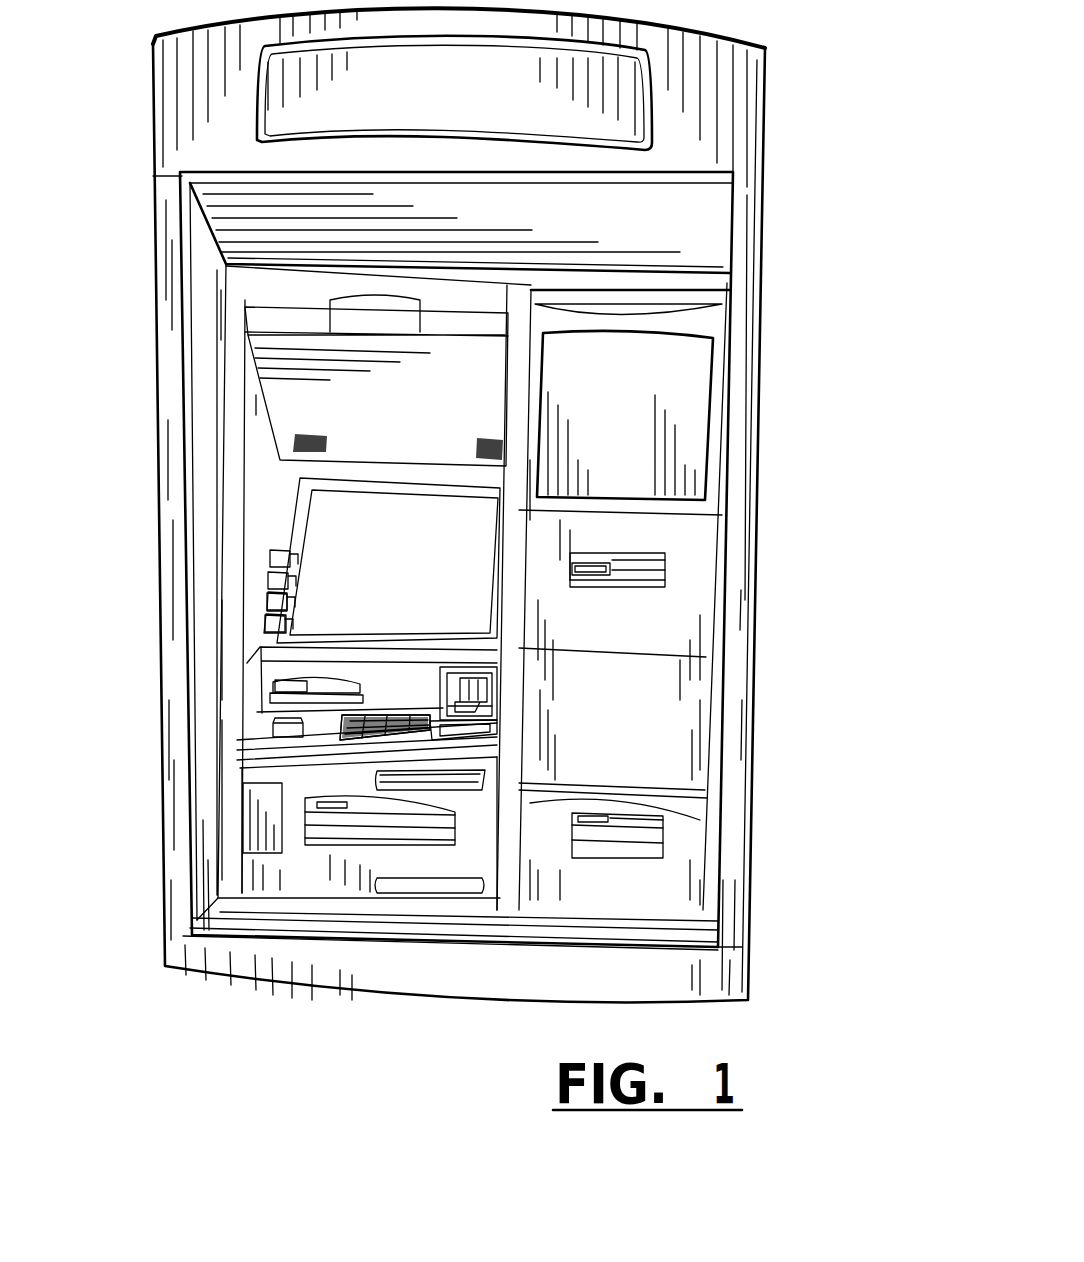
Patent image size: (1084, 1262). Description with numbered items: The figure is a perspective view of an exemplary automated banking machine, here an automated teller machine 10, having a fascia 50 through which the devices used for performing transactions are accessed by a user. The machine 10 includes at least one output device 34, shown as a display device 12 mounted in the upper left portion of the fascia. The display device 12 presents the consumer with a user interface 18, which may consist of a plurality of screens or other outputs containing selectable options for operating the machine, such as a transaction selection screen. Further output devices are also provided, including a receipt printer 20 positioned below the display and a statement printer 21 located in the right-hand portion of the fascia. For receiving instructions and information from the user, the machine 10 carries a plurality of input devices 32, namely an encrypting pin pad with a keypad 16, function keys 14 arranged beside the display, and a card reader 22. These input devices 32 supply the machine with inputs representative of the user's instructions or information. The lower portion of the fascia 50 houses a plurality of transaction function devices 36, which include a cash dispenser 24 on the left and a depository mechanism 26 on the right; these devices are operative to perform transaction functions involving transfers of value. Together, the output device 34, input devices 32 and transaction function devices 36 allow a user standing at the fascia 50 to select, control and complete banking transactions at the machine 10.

The automated teller machine 10 is at (459, 505).
The display device 12 is at (312, 542).
The function keys 14 is at (261, 636).
The keypad 16 is at (353, 730).
The user interface 18 is at (308, 600).
The receipt printer 20 is at (273, 683).
The statement printer 21 is at (663, 572).
The card reader 22 is at (497, 708).
The cash dispenser 24 is at (325, 828).
The depository mechanism 26 is at (643, 842).
The input devices 32 is at (258, 581).
The output device 34 is at (289, 493).
The transaction function devices 36 is at (571, 867).
The fascia 50 is at (694, 357).